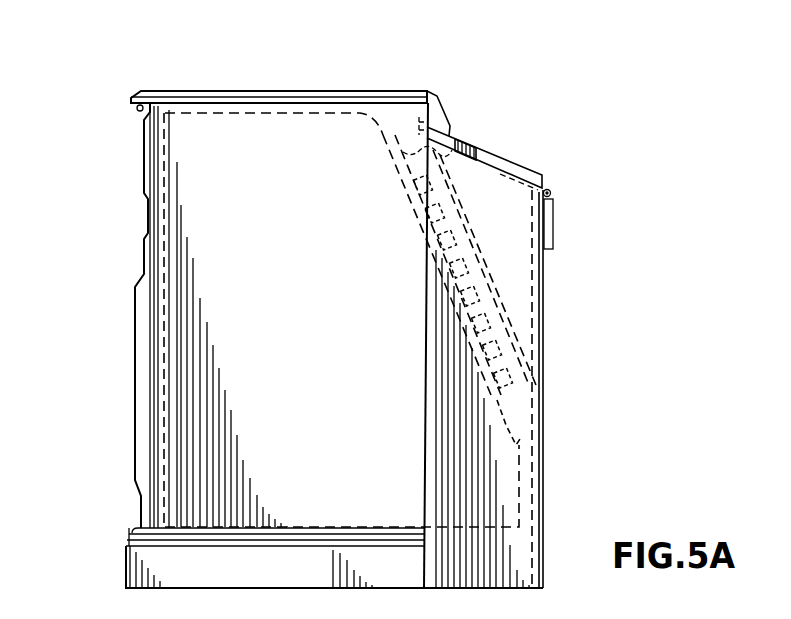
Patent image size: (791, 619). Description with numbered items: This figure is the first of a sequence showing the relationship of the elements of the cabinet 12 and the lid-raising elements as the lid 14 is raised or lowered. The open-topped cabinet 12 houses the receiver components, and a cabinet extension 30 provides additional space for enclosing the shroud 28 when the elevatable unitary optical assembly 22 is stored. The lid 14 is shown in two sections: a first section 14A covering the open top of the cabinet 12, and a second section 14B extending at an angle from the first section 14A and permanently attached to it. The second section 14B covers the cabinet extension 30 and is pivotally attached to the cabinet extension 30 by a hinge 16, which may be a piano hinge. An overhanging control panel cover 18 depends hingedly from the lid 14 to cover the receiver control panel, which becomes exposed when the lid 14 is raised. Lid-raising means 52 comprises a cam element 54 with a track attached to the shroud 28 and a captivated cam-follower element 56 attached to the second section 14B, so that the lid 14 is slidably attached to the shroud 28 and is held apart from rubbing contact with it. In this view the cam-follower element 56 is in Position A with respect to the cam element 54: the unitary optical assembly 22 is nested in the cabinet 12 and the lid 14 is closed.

The cabinet means 12 is at (134, 430).
The lid means 14 is at (298, 75).
The first section 14A is at (373, 94).
The second section 14B is at (508, 163).
The hinge 16 is at (551, 192).
The control panel cover means 18 is at (146, 152).
The unitary optical assembly means 22 is at (230, 240).
The shroud means 28 is at (238, 113).
The cabinet extension 30 is at (543, 397).
The lid-raising means 52 is at (484, 219).
The cam element 54 is at (483, 281).
The cam-follower element 56 is at (449, 137).